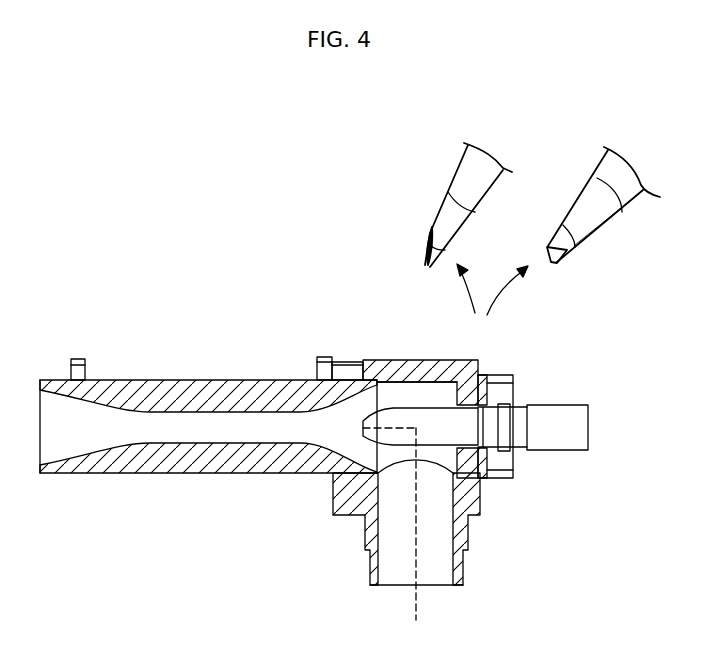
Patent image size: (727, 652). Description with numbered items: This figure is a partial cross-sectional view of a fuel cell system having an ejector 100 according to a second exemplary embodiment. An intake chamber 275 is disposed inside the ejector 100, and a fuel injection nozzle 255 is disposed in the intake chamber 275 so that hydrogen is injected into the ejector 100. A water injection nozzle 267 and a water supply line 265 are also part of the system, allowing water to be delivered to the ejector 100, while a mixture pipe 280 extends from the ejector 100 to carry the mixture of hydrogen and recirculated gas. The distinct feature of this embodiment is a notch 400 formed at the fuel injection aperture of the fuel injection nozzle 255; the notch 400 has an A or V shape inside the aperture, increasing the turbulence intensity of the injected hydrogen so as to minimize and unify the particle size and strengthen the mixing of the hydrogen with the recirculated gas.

The ejector 100 is at (314, 464).
The fuel injection nozzle 255 is at (436, 422).
The water supply line 265 is at (416, 535).
The water injection nozzle 267 is at (377, 425).
The intake chamber 275 is at (410, 392).
The mixture pipe 280 is at (217, 465).
The notch 400 is at (437, 250).